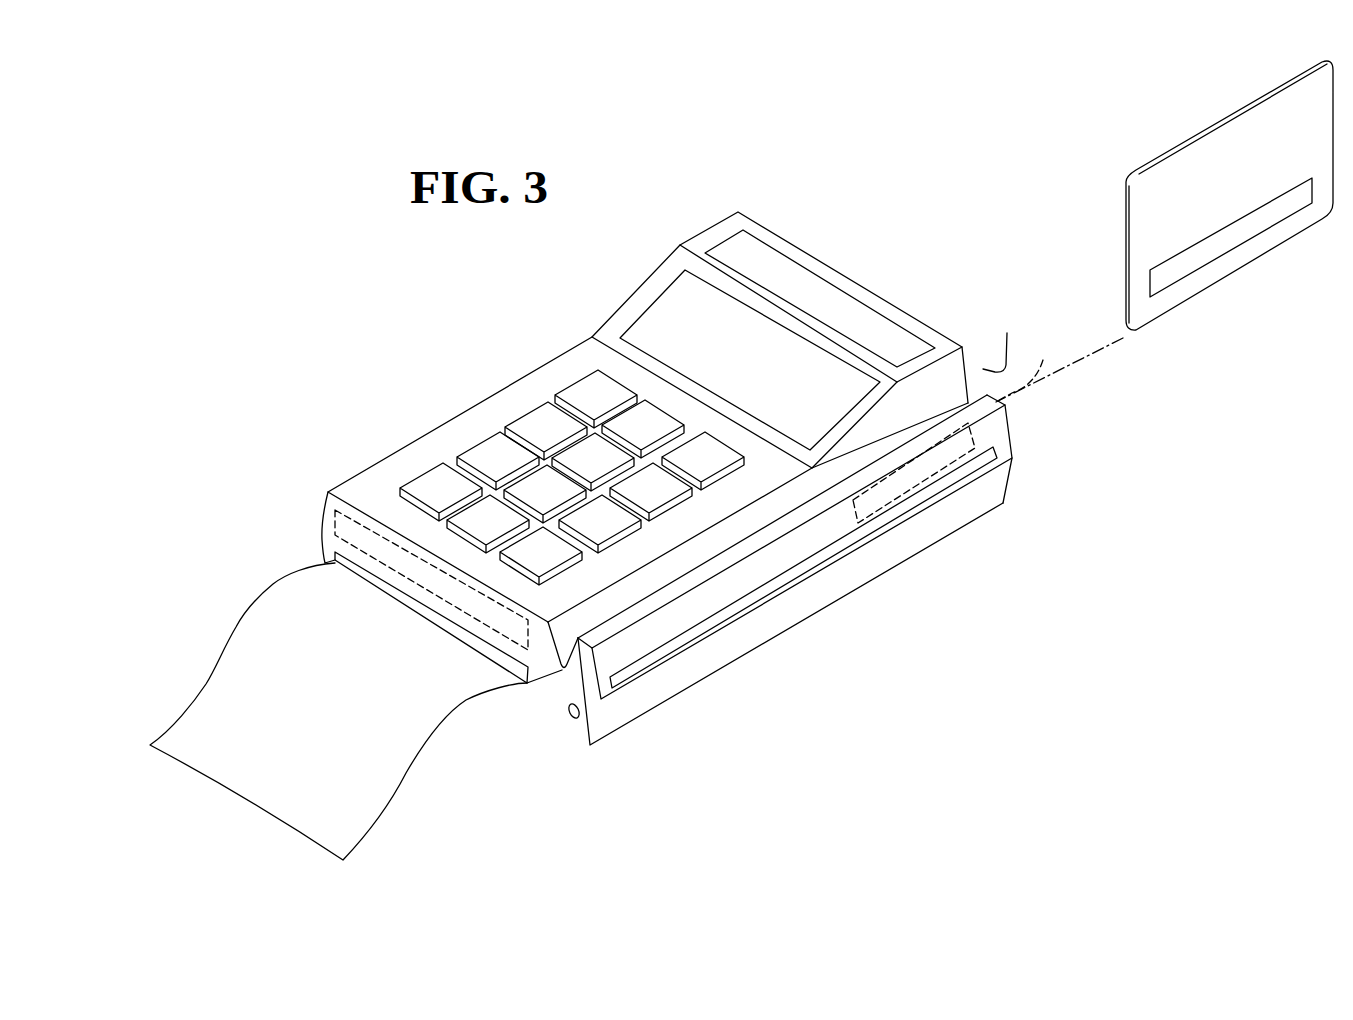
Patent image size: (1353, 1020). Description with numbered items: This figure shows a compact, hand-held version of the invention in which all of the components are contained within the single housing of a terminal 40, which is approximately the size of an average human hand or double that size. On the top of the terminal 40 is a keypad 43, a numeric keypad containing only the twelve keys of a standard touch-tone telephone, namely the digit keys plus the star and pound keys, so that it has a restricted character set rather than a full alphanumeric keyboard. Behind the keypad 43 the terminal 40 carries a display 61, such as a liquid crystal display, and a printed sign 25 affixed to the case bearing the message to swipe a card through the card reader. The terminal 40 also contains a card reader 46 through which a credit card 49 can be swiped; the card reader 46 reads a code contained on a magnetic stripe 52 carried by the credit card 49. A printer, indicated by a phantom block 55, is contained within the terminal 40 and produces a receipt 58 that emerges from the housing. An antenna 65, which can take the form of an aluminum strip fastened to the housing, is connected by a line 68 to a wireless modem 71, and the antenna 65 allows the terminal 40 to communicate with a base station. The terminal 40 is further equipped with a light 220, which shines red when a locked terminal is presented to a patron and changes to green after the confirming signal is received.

The keypad 43 is at (497, 353).
The terminal 40 is at (683, 692).
The display 61 is at (657, 297).
The printed sign 25 is at (810, 263).
The antenna 65 is at (788, 575).
The line 68 is at (980, 433).
The card reader 46 is at (1000, 342).
The wireless modem 71 is at (1059, 369).
The credit card 49 is at (1290, 242).
The magnetic stripe 52 is at (1207, 265).
The printer 55 is at (335, 530).
The receipt 58 is at (403, 800).
The light 220 is at (572, 720).